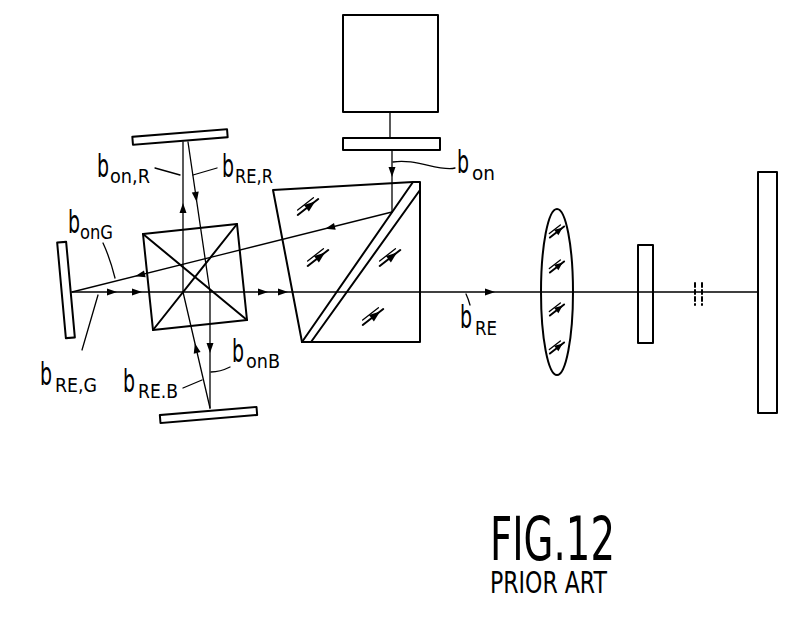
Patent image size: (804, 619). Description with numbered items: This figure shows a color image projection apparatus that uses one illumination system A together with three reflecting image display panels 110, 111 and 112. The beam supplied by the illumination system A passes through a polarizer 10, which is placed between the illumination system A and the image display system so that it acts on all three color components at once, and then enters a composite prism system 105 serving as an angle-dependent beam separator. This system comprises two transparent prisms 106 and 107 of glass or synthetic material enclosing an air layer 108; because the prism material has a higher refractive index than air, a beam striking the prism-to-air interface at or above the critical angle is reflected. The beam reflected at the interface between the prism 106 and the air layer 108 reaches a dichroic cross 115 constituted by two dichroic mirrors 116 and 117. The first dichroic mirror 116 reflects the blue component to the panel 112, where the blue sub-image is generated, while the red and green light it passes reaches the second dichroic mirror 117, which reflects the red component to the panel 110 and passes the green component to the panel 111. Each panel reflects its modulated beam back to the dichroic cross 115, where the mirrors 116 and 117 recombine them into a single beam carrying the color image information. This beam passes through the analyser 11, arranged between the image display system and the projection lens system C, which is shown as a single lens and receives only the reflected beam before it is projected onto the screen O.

The illumination system A is at (467, 82).
The polarizer 10 is at (436, 138).
The composite prism system 105 is at (377, 246).
The transparent prism 106 is at (342, 200).
The transparent prism 107 is at (393, 332).
The air layer 108 is at (315, 328).
The dichroic cross 115 is at (223, 231).
The dichroic mirror 116 is at (158, 321).
The dichroic mirror 117 is at (158, 243).
The image display panel 110 is at (167, 130).
The image display panel 111 is at (60, 302).
The image display panel 112 is at (218, 423).
The projection lens system C is at (554, 362).
The analyser 11 is at (645, 343).
The projection screen O is at (767, 413).